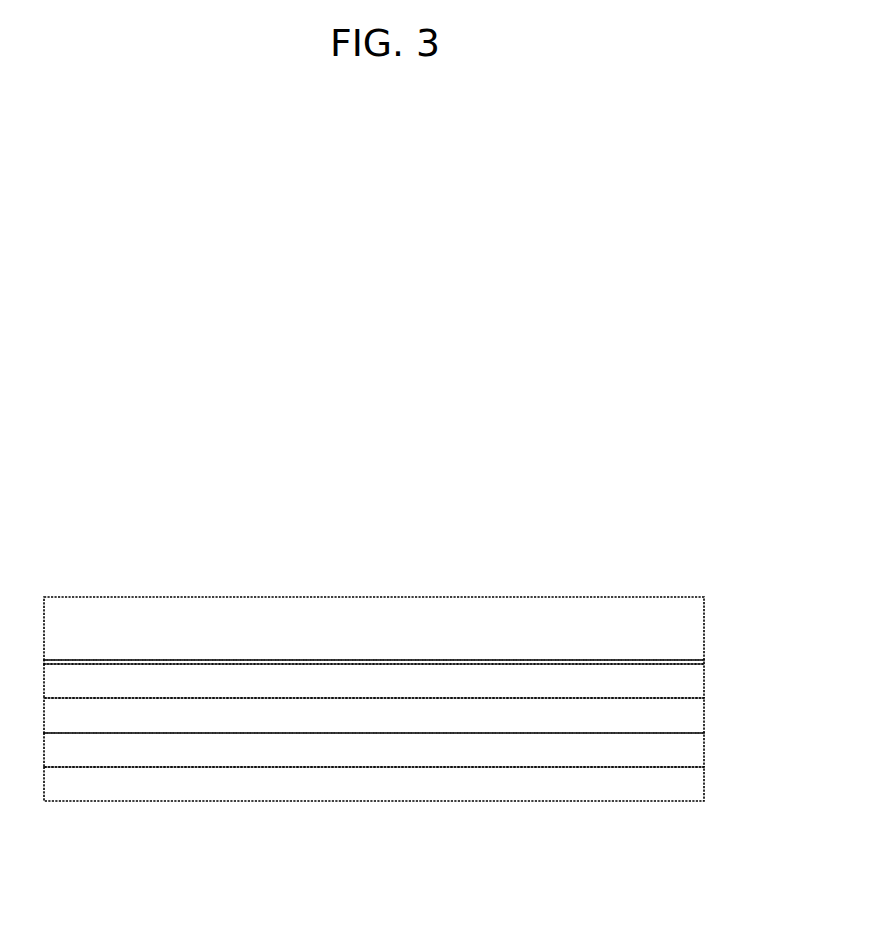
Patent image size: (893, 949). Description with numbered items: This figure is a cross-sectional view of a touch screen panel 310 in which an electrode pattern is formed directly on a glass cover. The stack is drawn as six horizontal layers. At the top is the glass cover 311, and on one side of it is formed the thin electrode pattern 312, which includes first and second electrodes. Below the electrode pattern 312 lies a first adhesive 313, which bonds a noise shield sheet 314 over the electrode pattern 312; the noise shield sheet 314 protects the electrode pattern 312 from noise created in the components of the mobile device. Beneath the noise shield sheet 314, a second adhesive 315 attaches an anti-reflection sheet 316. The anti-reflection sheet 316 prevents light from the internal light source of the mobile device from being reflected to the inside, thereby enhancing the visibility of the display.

The touch screen panel 310 is at (725, 497).
The glass cover 311 is at (704, 620).
The electrode pattern 312 is at (704, 661).
The first adhesive 313 is at (704, 692).
The noise shield sheet 314 is at (704, 723).
The second adhesive 315 is at (704, 757).
The anti-reflection sheet 316 is at (704, 790).